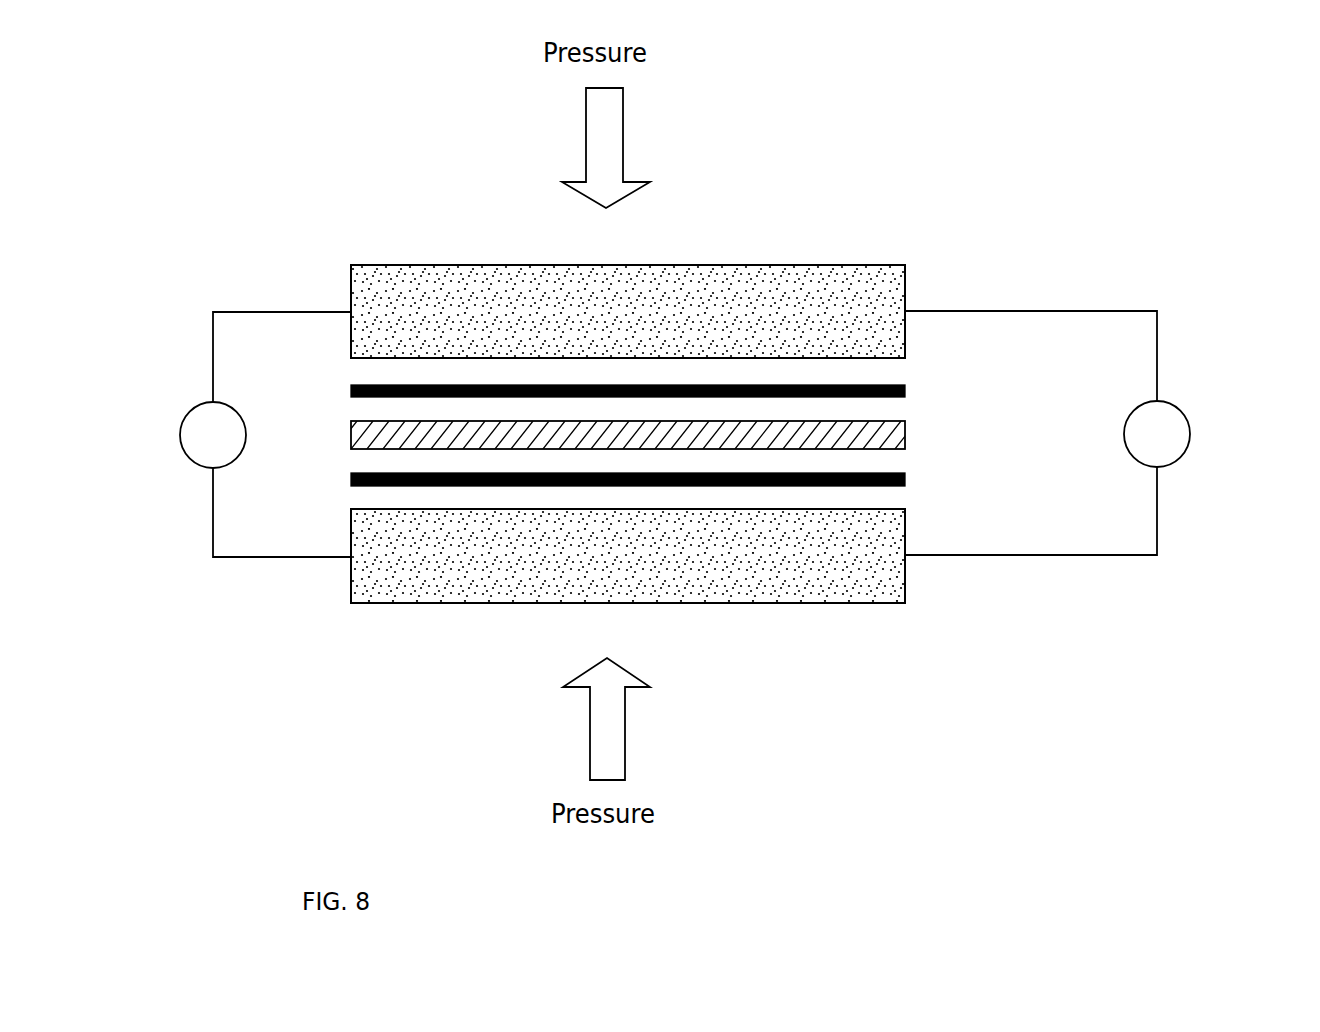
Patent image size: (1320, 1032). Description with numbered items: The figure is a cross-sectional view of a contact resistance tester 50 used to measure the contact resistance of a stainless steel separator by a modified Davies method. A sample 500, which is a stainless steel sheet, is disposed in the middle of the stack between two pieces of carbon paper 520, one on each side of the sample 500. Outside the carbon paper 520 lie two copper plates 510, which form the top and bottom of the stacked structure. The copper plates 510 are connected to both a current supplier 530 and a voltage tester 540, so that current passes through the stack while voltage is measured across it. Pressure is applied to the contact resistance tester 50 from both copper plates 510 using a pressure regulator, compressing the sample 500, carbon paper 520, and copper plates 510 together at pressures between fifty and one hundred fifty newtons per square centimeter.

The contact resistance tester 50 is at (900, 165).
The sample 500 is at (905, 430).
The copper plates 510 is at (850, 290).
The carbon paper 520 is at (878, 384).
The current supplier 530 is at (1183, 411).
The voltage tester 540 is at (190, 411).